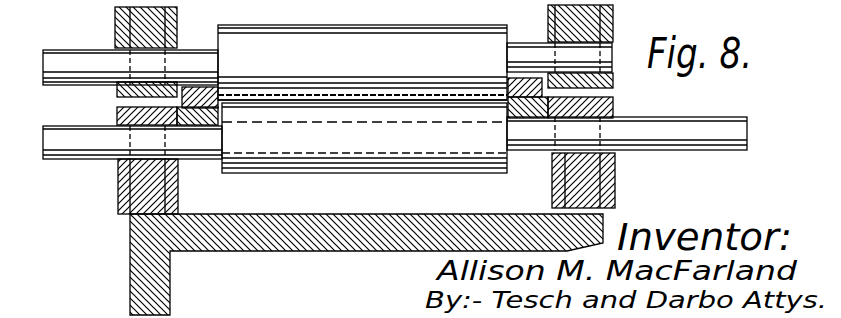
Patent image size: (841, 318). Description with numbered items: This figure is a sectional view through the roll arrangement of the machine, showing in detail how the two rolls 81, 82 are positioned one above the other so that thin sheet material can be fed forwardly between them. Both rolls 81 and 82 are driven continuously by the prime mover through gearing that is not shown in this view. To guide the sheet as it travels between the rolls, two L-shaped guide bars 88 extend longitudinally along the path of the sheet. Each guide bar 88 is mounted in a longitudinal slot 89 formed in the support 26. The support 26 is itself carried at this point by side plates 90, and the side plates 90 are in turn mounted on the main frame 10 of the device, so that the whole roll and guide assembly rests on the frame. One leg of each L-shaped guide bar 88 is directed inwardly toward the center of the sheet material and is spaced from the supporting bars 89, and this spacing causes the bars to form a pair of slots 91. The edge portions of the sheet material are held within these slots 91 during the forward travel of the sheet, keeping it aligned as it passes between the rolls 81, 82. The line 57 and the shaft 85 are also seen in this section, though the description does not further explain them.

The main frame 10 is at (170, 296).
The support 26 is at (117, 116).
The roller contact line 57 is at (341, 96).
The roll 81 is at (285, 173).
The roll 82 is at (293, 31).
The lower roller shaft 85 is at (745, 123).
The L-shaped guide bar 88 is at (196, 87).
The longitudinal slot 89 is at (200, 110).
The side plate 90 is at (178, 200).
The slot 91 is at (222, 118).